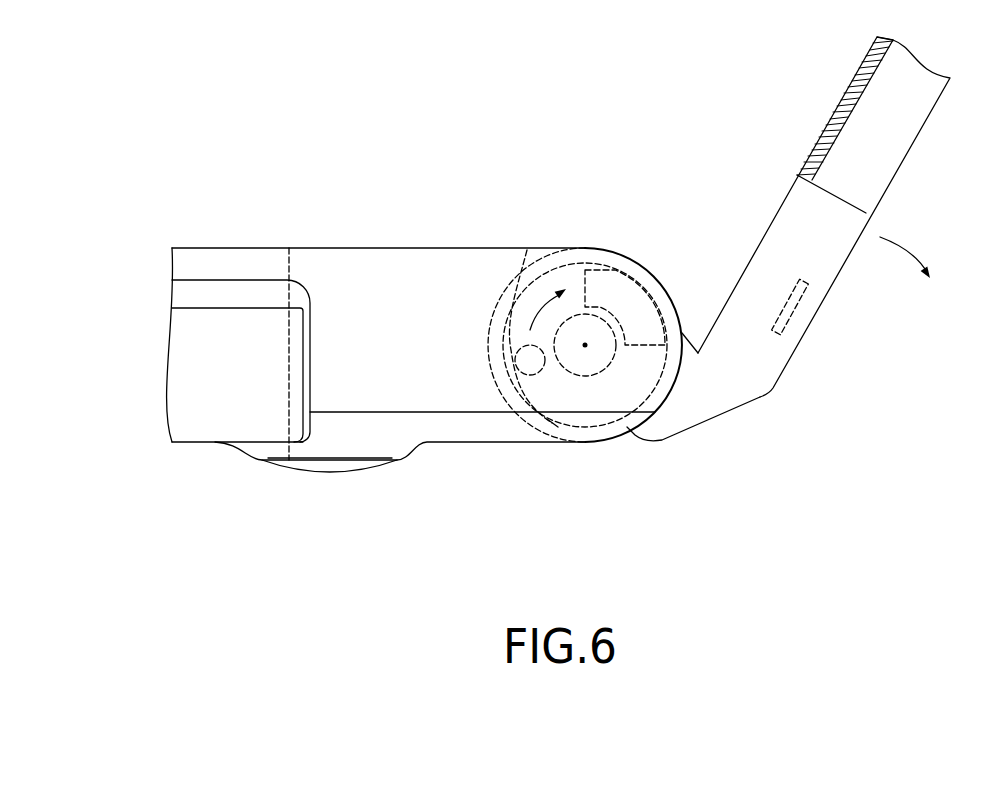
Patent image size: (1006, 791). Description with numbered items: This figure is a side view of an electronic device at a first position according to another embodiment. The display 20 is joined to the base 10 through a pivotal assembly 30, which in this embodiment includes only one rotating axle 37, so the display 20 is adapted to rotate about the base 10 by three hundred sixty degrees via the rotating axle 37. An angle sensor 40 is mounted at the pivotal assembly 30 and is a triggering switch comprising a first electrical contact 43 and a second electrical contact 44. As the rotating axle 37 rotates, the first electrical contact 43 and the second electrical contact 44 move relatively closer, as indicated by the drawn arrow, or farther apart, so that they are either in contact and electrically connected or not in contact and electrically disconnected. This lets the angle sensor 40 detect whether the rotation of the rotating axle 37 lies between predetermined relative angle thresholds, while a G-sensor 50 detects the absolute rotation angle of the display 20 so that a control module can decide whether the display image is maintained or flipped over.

The base 10 is at (208, 462).
The display 20 is at (922, 166).
The pivotal assembly 30 is at (616, 443).
The rotating axle 37 is at (552, 423).
The angle sensor 40 is at (473, 175).
The first electrical contact 43 is at (527, 250).
The second electrical contact 44 is at (603, 293).
The G-sensor 50 is at (797, 303).